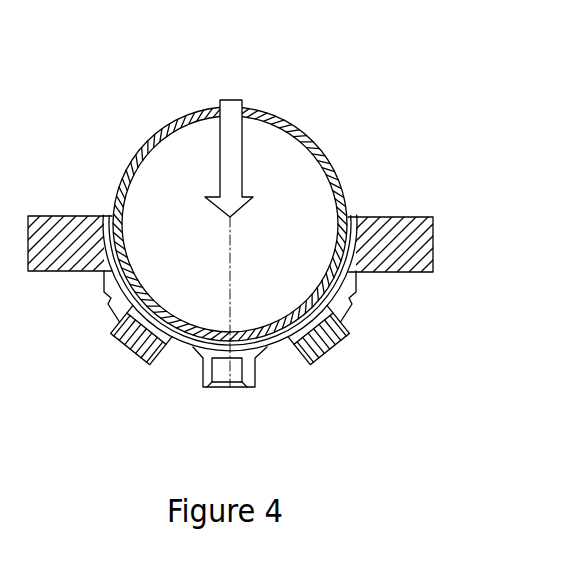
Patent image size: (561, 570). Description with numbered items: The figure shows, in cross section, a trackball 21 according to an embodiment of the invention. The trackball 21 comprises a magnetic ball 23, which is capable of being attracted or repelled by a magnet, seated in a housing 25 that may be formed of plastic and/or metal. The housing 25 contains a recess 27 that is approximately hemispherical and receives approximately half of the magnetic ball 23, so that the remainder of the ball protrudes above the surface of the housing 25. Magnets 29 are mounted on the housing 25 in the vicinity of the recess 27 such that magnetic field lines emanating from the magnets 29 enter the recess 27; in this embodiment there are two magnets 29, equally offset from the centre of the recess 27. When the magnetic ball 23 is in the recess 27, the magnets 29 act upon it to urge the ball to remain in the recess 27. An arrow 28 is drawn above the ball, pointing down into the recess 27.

The trackball 21 is at (457, 402).
The magnetic ball 23 is at (288, 175).
The housing 25 is at (410, 217).
The recess 27 is at (178, 358).
The insertion direction arrow 28 is at (233, 98).
The magnets 29 is at (340, 350).